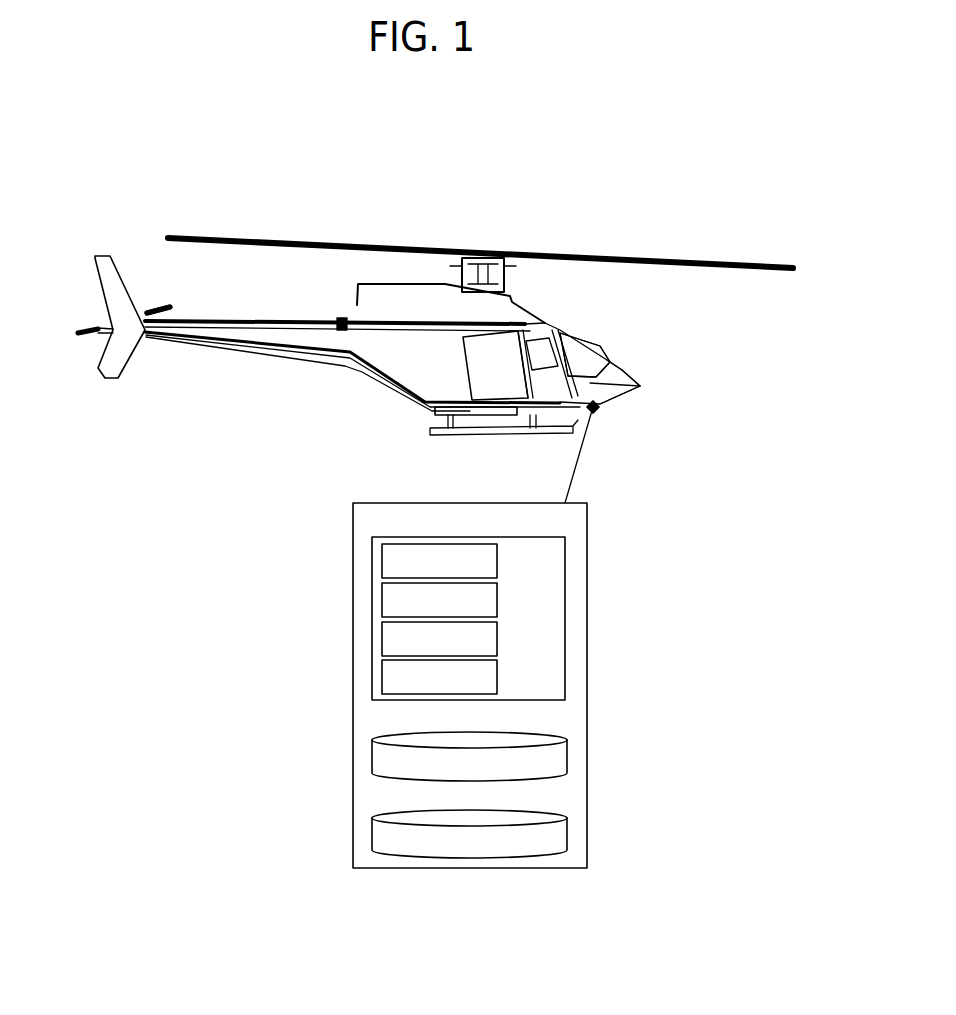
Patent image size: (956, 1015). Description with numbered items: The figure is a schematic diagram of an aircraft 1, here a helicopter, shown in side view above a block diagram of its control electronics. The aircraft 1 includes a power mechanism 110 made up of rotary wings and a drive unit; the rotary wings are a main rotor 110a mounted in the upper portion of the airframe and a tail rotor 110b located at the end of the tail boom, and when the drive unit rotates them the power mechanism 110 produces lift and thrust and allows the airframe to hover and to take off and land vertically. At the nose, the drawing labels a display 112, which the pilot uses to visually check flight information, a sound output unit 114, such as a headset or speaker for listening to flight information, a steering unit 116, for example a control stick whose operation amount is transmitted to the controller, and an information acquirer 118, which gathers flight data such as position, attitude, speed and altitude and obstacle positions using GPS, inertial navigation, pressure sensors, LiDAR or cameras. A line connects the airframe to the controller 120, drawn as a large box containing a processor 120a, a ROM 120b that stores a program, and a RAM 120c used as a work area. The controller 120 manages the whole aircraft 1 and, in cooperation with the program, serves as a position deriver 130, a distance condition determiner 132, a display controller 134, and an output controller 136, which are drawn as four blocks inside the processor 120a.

The aircraft 1 is at (623, 222).
The power mechanism 110 is at (208, 135).
The main rotor 110a is at (207, 236).
The tail rotor 110b is at (157, 290).
The display 112 is at (573, 330).
The sound output unit 114 is at (637, 348).
The steering unit 116 is at (657, 385).
The information acquirer 118 is at (607, 394).
The controller 120 is at (412, 503).
The processor 120a is at (484, 537).
The ROM 120b is at (487, 731).
The RAM 120c is at (487, 809).
The position deriver 130 is at (498, 562).
The distance condition determiner 132 is at (498, 600).
The display controller 134 is at (498, 639).
The output controller 136 is at (498, 677).